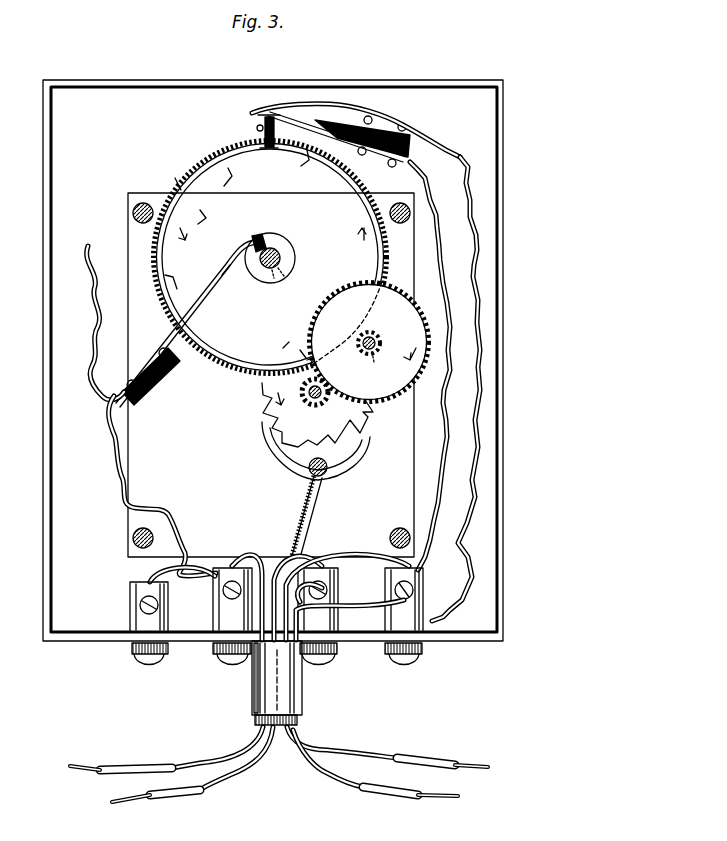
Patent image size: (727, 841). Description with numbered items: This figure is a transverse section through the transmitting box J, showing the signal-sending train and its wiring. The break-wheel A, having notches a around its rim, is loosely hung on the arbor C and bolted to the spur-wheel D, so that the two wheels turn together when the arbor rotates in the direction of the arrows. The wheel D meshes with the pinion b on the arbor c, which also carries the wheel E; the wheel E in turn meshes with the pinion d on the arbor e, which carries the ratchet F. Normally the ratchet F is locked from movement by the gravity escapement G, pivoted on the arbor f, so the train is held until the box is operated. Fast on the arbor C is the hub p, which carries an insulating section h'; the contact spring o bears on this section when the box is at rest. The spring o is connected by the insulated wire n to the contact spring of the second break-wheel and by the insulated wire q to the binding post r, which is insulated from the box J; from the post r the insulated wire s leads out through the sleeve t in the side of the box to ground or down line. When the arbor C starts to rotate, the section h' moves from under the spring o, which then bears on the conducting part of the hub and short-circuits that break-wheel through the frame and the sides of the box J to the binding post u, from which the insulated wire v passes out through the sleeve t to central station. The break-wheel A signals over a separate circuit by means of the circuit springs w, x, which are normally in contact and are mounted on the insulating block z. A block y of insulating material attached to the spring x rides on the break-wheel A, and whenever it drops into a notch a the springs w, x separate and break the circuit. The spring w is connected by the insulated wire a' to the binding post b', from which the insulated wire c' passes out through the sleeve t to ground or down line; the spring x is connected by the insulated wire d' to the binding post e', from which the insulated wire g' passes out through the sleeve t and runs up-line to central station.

The box J is at (276, 80).
The break-wheel A is at (270, 257).
The spur-wheel D is at (180, 167).
The notches a is at (237, 257).
The arbor C is at (282, 254).
The insulating section h' is at (261, 230).
The hub p is at (254, 275).
The contact spring o is at (206, 302).
The insulated wire n is at (96, 328).
The insulated wire q is at (112, 480).
The insulated wire v is at (214, 580).
The block of insulating material y is at (262, 125).
The circuit spring x is at (312, 134).
The block of insulating material z is at (400, 152).
The circuit spring w is at (326, 106).
The insulated wire a' is at (463, 372).
The insulated wire d' is at (437, 366).
The wheel E is at (369, 342).
The pinion b is at (378, 339).
The arbor c is at (371, 365).
The pinion d is at (319, 399).
The arbor e is at (305, 412).
The ratchet F is at (368, 414).
The gravity escapement G is at (352, 468).
The arbor f is at (312, 486).
The binding post u is at (128, 604).
The binding post r is at (224, 566).
The insulated wire g' is at (324, 668).
The binding post b' is at (415, 616).
The insulated wire s is at (252, 562).
The insulated wire c' is at (387, 660).
The binding post e' is at (350, 615).
The sleeve t is at (303, 688).